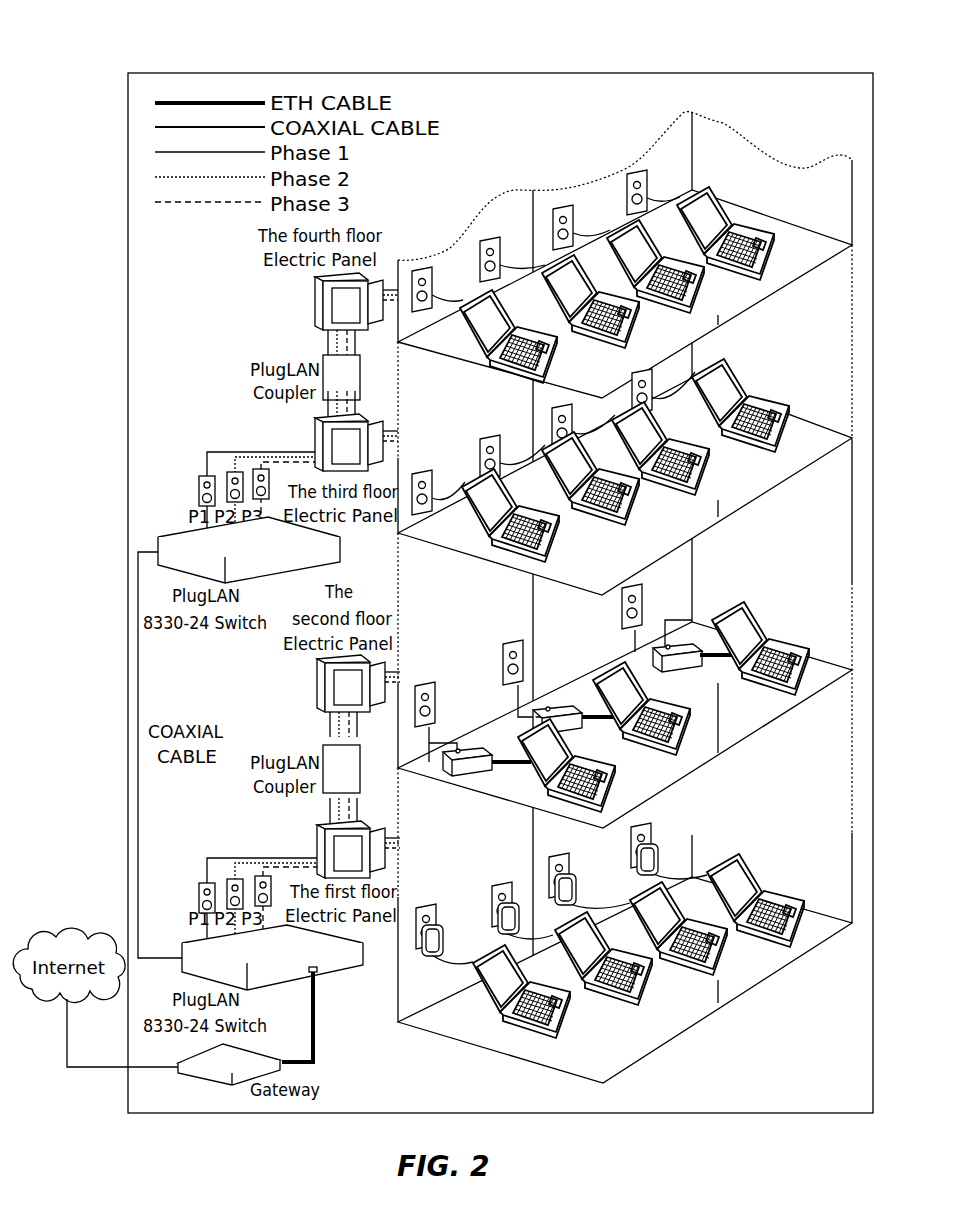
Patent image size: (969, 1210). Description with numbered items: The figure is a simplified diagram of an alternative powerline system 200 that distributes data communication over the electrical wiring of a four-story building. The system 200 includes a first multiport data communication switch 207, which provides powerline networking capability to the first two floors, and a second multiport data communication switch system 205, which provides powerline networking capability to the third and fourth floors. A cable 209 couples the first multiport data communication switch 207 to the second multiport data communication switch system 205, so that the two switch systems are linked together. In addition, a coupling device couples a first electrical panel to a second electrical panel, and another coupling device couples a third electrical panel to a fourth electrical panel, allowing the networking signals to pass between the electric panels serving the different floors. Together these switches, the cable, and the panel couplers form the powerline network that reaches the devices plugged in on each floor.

The alternative powerline system 200 is at (553, 88).
The second multiport data communication switch system 205 is at (220, 330).
The first multiport data communication switch 207 is at (268, 697).
The coaxial cable 209 is at (139, 661).